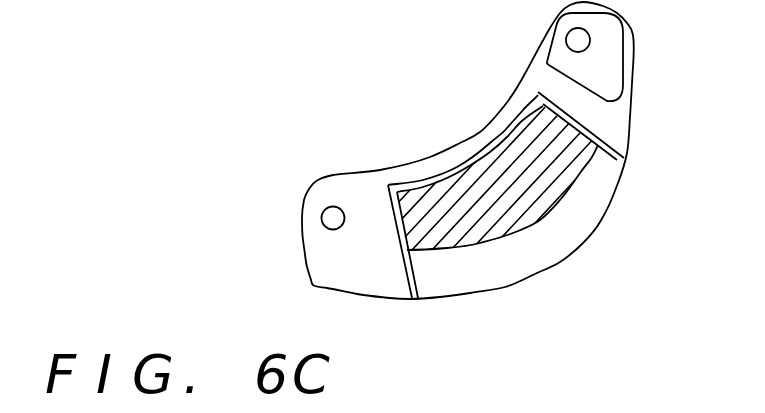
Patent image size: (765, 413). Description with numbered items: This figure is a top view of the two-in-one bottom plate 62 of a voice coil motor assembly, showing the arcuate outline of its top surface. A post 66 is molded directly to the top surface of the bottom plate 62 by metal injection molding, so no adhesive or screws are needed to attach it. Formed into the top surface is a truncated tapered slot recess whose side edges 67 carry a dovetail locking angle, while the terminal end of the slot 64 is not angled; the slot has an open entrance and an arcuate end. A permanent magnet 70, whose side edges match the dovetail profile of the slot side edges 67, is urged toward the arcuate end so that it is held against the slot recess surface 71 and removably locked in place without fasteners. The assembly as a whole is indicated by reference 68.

The bottom plate 62 is at (528, 70).
The terminal end of the slot 64 is at (463, 168).
The post 66 is at (607, 67).
The side edges of the slot recess 67 is at (413, 280).
The bracket assembly 68 is at (357, 80).
The permanent magnet 70 is at (546, 178).
The slot recess surface 71 is at (527, 257).